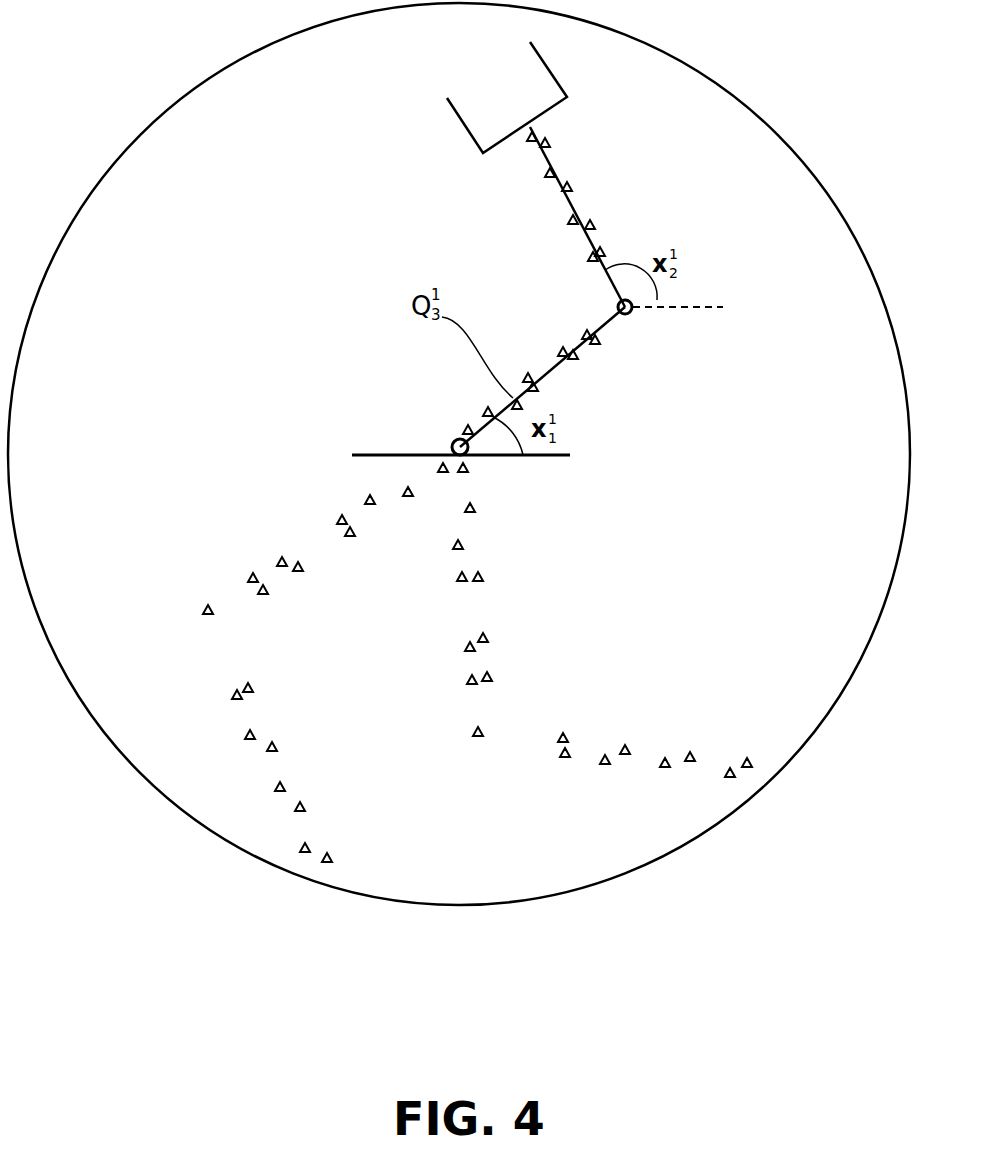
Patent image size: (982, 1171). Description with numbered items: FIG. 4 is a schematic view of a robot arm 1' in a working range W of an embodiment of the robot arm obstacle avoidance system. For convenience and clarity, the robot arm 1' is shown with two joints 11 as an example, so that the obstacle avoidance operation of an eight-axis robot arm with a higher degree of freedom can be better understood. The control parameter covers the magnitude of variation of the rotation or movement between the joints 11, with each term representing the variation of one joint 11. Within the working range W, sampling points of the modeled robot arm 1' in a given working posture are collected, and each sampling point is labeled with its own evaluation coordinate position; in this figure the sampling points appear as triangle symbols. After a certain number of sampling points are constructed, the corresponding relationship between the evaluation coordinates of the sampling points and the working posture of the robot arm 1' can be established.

The robot arm 1' is at (537, 248).
The joint 11 is at (616, 306).
The working range W is at (459, 454).